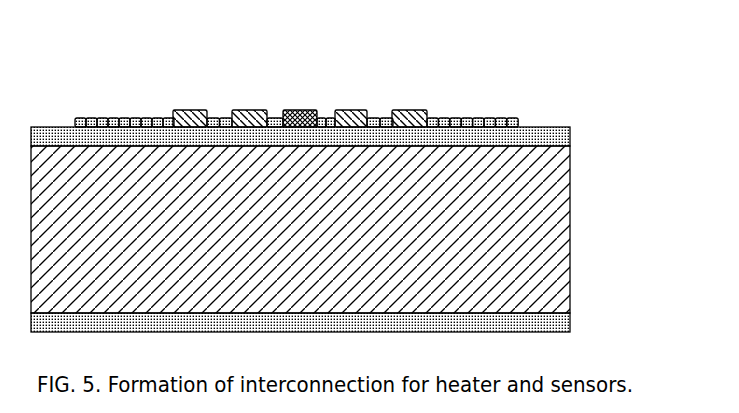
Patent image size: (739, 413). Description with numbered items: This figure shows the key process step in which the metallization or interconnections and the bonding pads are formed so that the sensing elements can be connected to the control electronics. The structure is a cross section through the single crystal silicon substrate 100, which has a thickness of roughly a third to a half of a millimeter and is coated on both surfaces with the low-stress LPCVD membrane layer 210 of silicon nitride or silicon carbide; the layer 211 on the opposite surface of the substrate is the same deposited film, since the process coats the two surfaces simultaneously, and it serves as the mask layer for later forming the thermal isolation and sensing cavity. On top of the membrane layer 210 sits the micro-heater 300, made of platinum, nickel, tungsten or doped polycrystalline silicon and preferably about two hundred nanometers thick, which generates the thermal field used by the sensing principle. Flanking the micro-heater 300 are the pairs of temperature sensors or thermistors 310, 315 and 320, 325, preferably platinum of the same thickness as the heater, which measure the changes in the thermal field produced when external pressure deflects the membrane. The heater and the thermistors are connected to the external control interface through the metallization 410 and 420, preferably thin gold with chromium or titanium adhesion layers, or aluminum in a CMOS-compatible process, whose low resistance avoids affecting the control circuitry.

The single crystal silicon substrate 100 is at (515, 236).
The membrane layer 210 is at (560, 133).
The bottom insulating layer 211 is at (547, 317).
The micro-heater 300 is at (300, 110).
The temperature sensor 310 is at (353, 110).
The temperature sensor 315 is at (245, 112).
The temperature sensor 320 is at (408, 110).
The temperature sensor 325 is at (177, 112).
The metallization 410 is at (487, 120).
The metallization 420 is at (110, 120).